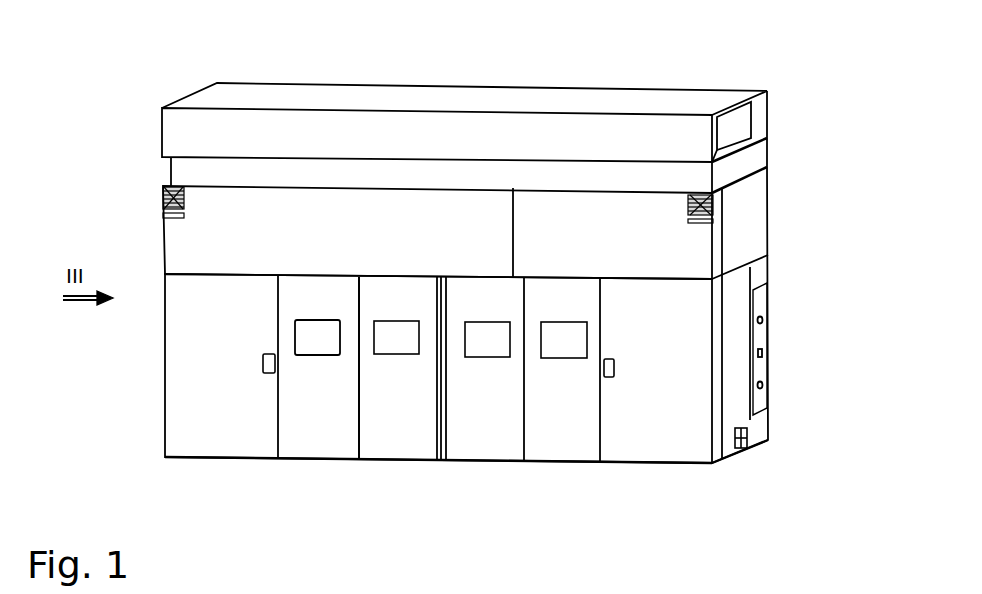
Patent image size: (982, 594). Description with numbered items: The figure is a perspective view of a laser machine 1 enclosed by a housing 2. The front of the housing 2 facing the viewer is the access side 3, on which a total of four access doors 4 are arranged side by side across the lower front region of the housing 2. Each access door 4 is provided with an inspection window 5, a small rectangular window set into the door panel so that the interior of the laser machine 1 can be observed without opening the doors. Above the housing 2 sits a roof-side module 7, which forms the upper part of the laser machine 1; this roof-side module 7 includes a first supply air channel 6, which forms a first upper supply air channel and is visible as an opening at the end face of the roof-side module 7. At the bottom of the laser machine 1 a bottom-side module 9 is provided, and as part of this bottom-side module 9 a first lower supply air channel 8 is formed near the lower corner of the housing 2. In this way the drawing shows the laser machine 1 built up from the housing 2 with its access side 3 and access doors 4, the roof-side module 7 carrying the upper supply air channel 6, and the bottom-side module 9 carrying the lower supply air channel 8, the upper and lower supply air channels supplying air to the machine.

The laser machine 1 is at (141, 90).
The housing 2 is at (130, 188).
The access side 3 is at (438, 404).
The access door 4 is at (318, 367).
The inspection window 5 is at (317, 337).
The first supply air channel 6 is at (751, 112).
The roof-side module 7 is at (784, 156).
The first lower supply air channel 8 is at (754, 432).
The bottom-side module 9 is at (748, 471).